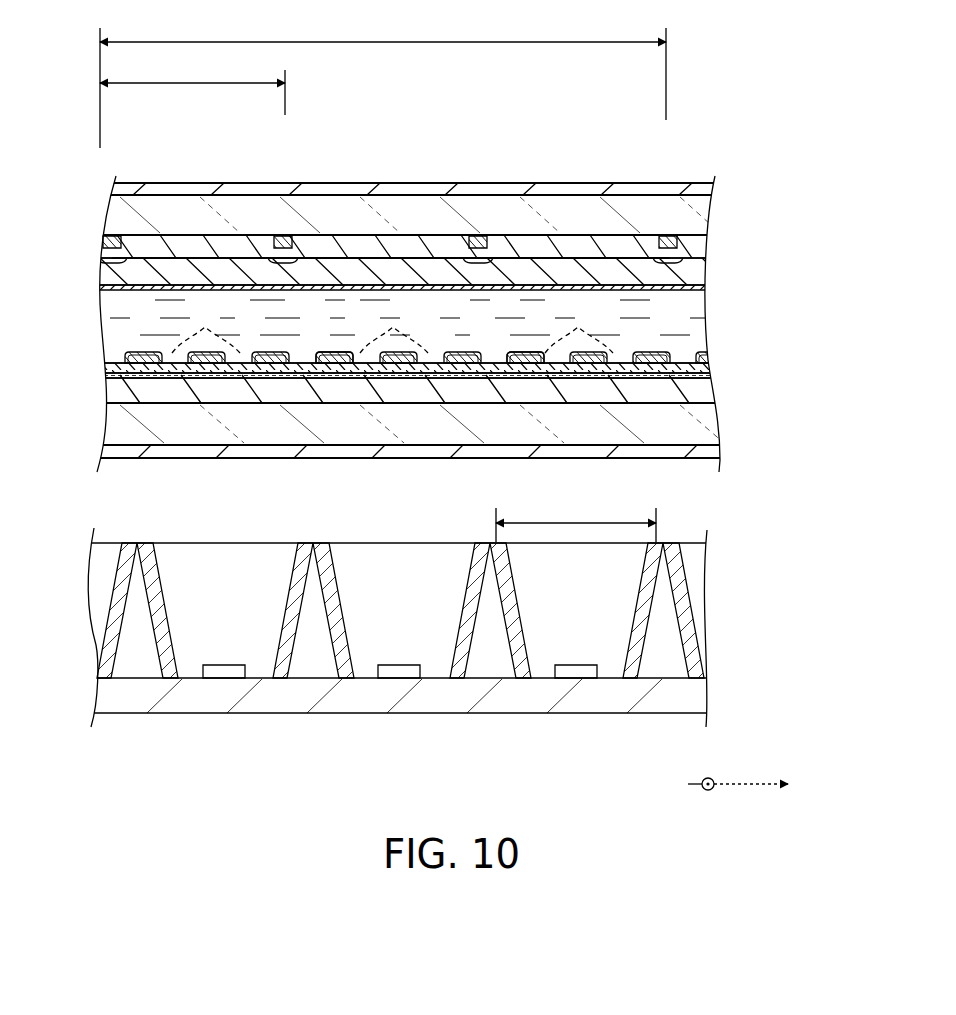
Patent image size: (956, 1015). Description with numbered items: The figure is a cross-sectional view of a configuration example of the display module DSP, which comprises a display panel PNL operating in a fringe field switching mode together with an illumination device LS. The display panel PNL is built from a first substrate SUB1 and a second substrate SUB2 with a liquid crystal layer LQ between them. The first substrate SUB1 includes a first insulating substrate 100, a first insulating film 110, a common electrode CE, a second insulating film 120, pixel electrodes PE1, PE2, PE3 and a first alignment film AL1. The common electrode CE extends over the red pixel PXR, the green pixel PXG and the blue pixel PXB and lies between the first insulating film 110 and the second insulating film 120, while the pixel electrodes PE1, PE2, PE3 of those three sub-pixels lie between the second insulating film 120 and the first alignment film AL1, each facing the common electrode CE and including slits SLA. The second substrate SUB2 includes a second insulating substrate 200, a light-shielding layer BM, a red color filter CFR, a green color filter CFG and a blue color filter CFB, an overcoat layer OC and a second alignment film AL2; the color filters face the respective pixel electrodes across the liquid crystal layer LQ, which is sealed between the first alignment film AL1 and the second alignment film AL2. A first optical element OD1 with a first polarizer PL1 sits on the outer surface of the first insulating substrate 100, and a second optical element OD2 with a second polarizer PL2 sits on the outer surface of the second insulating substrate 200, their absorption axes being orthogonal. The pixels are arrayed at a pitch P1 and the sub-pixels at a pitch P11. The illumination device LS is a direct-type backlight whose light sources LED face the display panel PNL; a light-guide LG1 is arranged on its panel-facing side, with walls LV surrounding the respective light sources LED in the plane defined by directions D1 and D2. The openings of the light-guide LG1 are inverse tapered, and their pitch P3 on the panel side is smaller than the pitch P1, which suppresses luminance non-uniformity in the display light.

The display panel PNL is at (776, 309).
The display module DSP is at (545, 120).
The second optical element OD2 is at (700, 190).
The second polarizer PL2 is at (410, 189).
The second substrate SUB2 is at (707, 247).
The second insulating substrate 200 is at (118, 208).
The light-shielding layer BM is at (115, 236).
The red color filter CFR is at (194, 245).
The green color filter CFG is at (372, 245).
The blue color filter CFB is at (568, 245).
The red pixel PXR is at (242, 268).
The green pixel PXG is at (427, 268).
The blue pixel PXB is at (603, 268).
The overcoat layer OC is at (120, 268).
The second alignment film AL2 is at (100, 287).
The liquid crystal layer LQ is at (697, 323).
The first alignment film AL1 is at (106, 364).
The pixel electrode PE1 is at (208, 368).
The pixel electrode PE2 is at (331, 368).
The pixel electrode PE3 is at (522, 368).
The slits SLA is at (392, 327).
The second insulating film 120 is at (107, 372).
The common electrode CE is at (108, 378).
The first insulating film 110 is at (108, 398).
The first substrate SUB1 is at (729, 428).
The first insulating substrate 100 is at (120, 432).
The first optical element OD1 is at (705, 455).
The first polarizer PL1 is at (410, 451).
The pitch P1 is at (383, 83).
The pitch P11 is at (192, 87).
The pitch P3 is at (576, 521).
The light-guide LG1 is at (693, 573).
The illumination device LS is at (685, 700).
The walls LV is at (176, 680).
The light sources LED is at (225, 672).
The first direction D1 is at (756, 784).
The second direction D2 is at (708, 799).